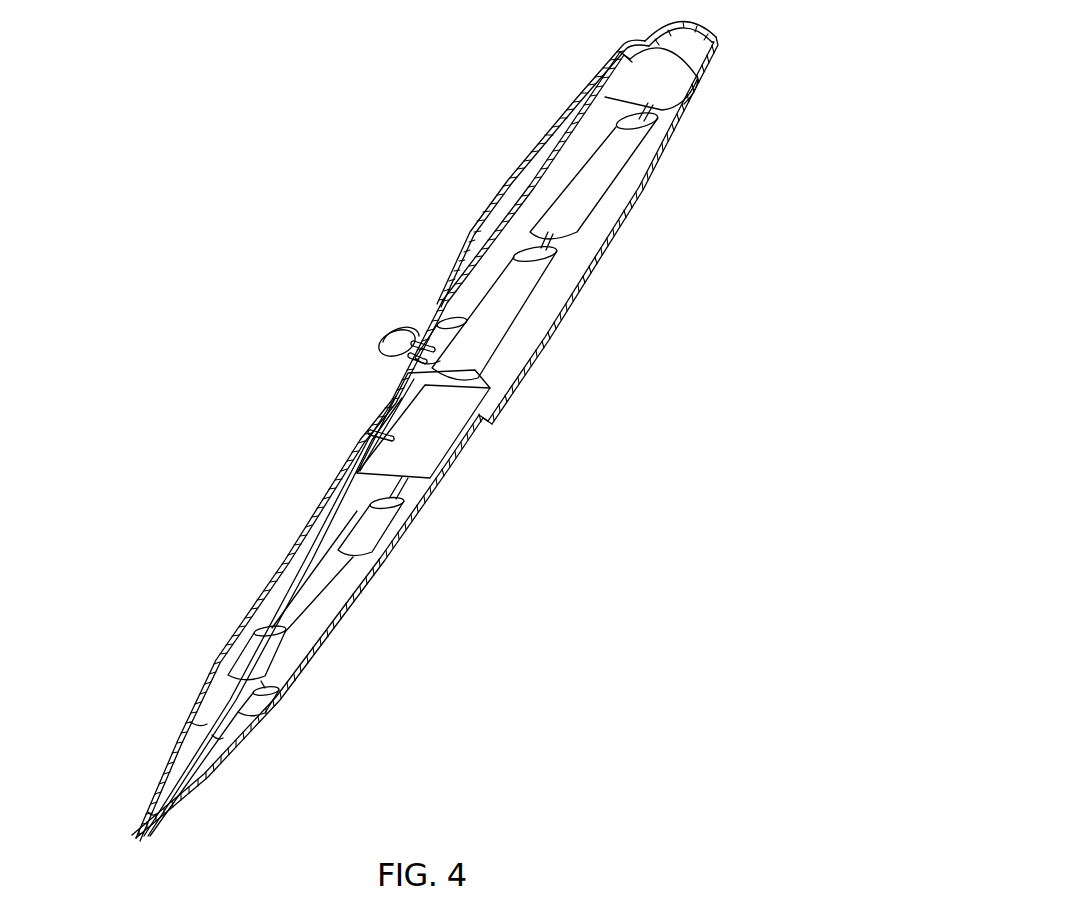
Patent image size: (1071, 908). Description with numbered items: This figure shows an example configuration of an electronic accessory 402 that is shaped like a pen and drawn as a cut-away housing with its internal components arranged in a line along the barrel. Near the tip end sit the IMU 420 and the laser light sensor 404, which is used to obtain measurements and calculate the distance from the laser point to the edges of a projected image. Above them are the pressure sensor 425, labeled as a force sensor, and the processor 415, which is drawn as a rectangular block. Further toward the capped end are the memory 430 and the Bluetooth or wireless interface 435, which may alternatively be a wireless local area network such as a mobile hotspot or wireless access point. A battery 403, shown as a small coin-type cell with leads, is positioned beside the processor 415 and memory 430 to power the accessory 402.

The electronic accessory 402 is at (386, 134).
The battery 403 is at (390, 340).
The laser light sensor 404 is at (262, 661).
The processor 415 is at (438, 442).
The IMU 420 is at (262, 704).
The pressure sensor 425 is at (370, 520).
The memory 430 is at (503, 313).
The wireless interface 435 is at (598, 186).